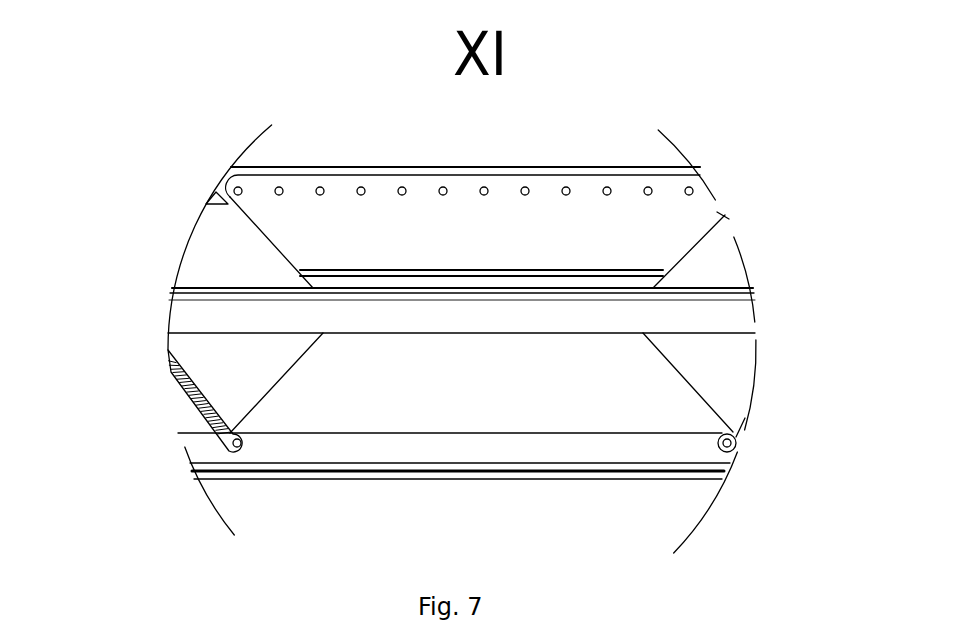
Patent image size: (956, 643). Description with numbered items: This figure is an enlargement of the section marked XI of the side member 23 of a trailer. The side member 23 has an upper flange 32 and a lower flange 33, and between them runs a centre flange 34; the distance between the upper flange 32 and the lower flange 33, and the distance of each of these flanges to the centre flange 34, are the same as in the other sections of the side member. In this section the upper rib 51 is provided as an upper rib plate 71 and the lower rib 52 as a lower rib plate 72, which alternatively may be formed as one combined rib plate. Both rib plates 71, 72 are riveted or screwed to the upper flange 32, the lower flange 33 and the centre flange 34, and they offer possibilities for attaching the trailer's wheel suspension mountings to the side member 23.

The side member 23 is at (608, 108).
The upper flange 32 is at (330, 166).
The lower flange 33 is at (622, 452).
The centre flange 34 is at (393, 318).
The upper rib 51 is at (206, 240).
The lower rib 52 is at (219, 400).
The upper rib plate 71 is at (422, 232).
The lower rib plate 72 is at (413, 407).